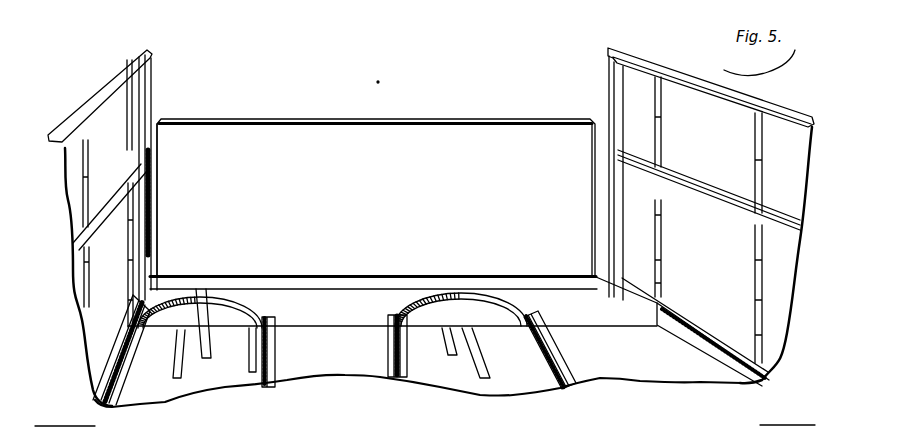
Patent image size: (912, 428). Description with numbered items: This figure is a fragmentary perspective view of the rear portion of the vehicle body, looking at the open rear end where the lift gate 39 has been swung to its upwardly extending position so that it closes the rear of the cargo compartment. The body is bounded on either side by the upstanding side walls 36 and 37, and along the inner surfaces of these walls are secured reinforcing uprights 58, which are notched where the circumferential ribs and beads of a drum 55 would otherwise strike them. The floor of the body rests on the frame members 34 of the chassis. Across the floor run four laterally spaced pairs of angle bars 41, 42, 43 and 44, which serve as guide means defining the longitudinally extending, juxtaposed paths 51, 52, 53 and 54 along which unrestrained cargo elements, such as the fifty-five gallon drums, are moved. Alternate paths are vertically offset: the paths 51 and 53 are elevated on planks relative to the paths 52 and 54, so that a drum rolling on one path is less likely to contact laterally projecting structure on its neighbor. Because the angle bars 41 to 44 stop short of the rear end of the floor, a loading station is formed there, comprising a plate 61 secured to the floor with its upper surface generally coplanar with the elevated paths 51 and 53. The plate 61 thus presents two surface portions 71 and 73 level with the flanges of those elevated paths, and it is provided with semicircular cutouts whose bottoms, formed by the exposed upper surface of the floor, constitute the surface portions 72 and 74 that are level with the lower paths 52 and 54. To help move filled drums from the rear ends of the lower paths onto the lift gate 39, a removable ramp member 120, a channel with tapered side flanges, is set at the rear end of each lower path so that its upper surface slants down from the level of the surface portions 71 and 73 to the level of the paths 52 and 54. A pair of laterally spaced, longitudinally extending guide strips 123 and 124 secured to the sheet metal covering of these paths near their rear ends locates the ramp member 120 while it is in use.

The frame members 34 is at (574, 6).
The side wall 36 is at (810, 194).
The side wall 37 is at (64, 193).
The lift gate 39 is at (434, 121).
The angle bars 41 is at (690, 354).
The angle bars 42 is at (411, 364).
The angle bars 43 is at (278, 368).
The angle bars 44 is at (137, 383).
The path 51 is at (622, 375).
The path 52 is at (518, 375).
The path 53 is at (348, 362).
The path 54 is at (219, 382).
The drum 55 is at (422, 420).
The reinforcing uprights 58 is at (127, 100).
The plate 61 is at (523, 298).
The surface portion 71 is at (603, 315).
The surface portion 72 is at (481, 325).
The surface portion 73 is at (350, 316).
The surface portion 74 is at (236, 325).
The ramp member 120 is at (215, 303).
The guide strip 123 is at (182, 346).
The guide strip 124 is at (206, 352).